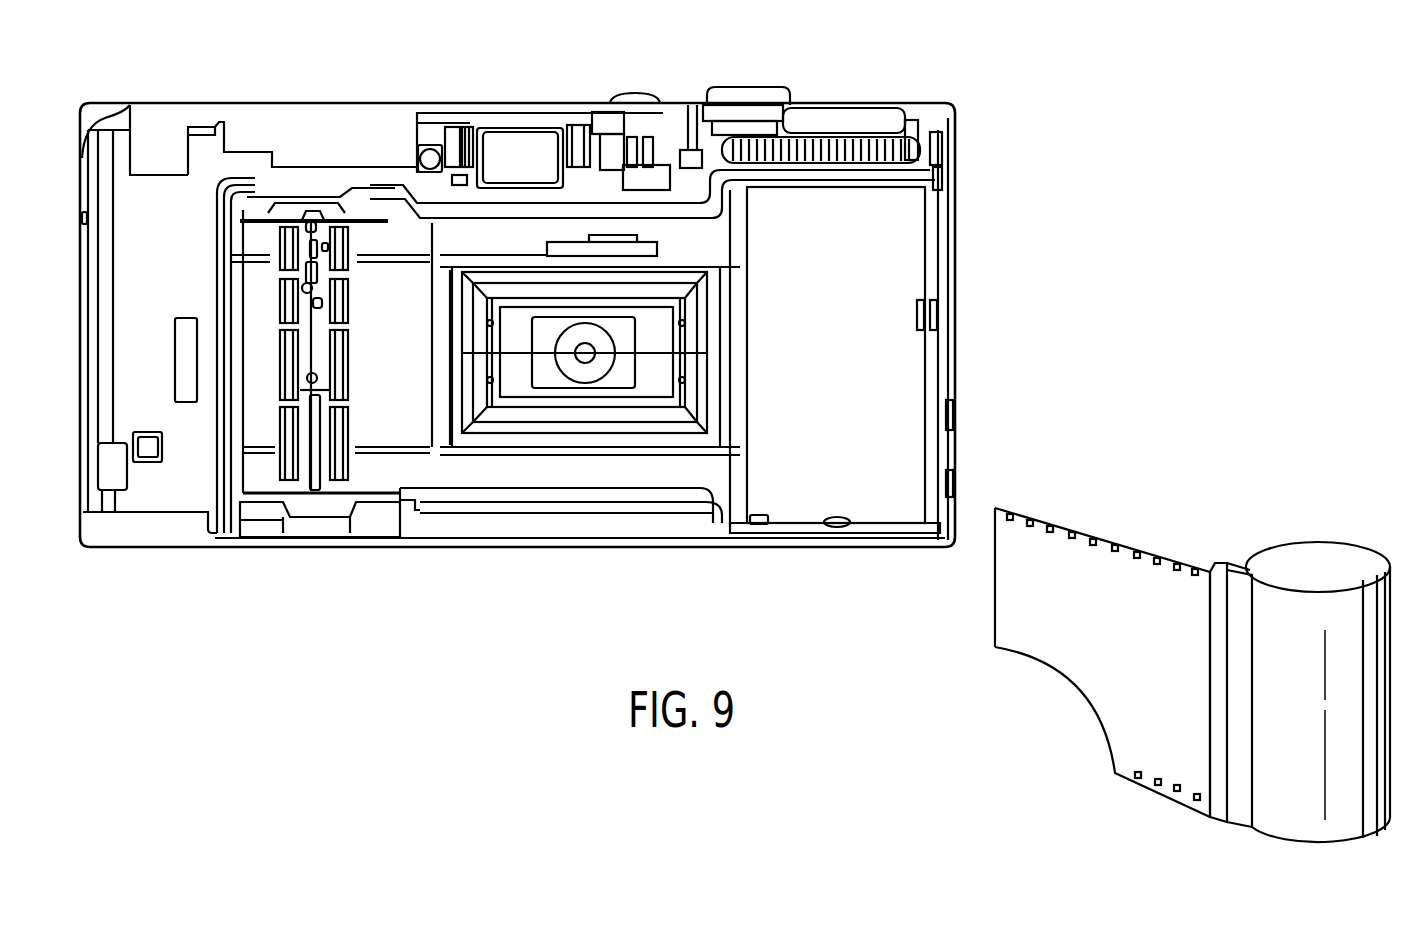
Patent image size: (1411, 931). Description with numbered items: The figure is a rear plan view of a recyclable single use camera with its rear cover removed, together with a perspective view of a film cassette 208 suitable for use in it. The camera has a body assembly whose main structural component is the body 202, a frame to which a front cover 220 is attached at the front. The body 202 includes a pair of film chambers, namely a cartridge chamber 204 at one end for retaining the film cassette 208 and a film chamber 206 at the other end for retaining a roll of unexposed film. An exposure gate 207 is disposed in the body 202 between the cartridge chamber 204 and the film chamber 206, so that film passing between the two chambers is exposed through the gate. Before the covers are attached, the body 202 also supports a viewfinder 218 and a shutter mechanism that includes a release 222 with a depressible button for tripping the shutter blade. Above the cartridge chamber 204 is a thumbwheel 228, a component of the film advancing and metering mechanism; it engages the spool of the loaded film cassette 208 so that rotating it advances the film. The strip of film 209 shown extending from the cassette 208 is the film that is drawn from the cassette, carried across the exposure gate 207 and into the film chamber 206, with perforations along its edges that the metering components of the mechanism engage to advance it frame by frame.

The front cover 220 is at (168, 103).
The viewfinder 218 is at (518, 143).
The release 222 is at (742, 87).
The thumbwheel 228 is at (918, 148).
The film chamber 206 is at (372, 398).
The exposure gate 207 is at (570, 408).
The body 202 is at (637, 478).
The cartridge chamber 204 is at (890, 508).
The film strip 209 is at (1104, 537).
The film cassette 208 is at (1303, 553).